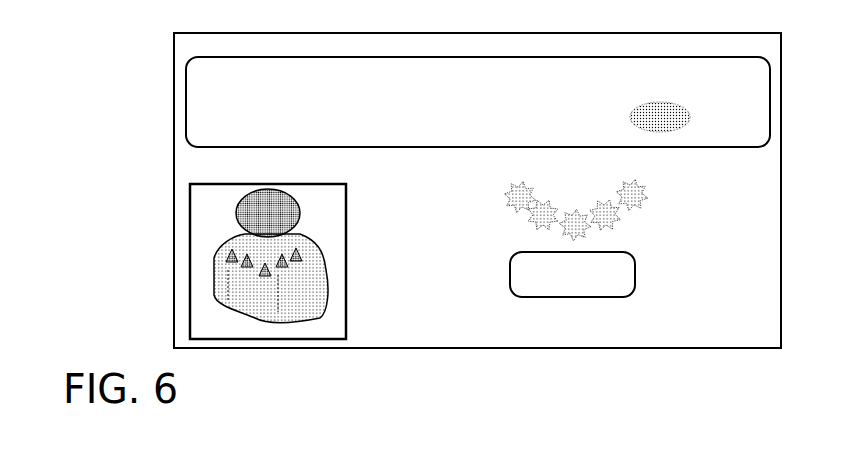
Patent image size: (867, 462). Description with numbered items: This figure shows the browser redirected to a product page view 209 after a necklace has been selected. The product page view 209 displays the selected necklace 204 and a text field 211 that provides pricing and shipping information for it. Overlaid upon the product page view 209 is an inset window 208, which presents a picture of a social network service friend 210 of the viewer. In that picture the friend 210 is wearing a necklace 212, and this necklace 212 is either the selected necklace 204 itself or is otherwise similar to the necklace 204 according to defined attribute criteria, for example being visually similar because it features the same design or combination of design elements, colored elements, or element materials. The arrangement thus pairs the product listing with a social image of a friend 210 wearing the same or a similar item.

The selected necklace 204 is at (515, 208).
The inset window 208 is at (347, 318).
The product page view 209 is at (172, 163).
The social network service friend 210 is at (285, 220).
The text field 211 is at (187, 65).
The necklace 212 is at (298, 252).